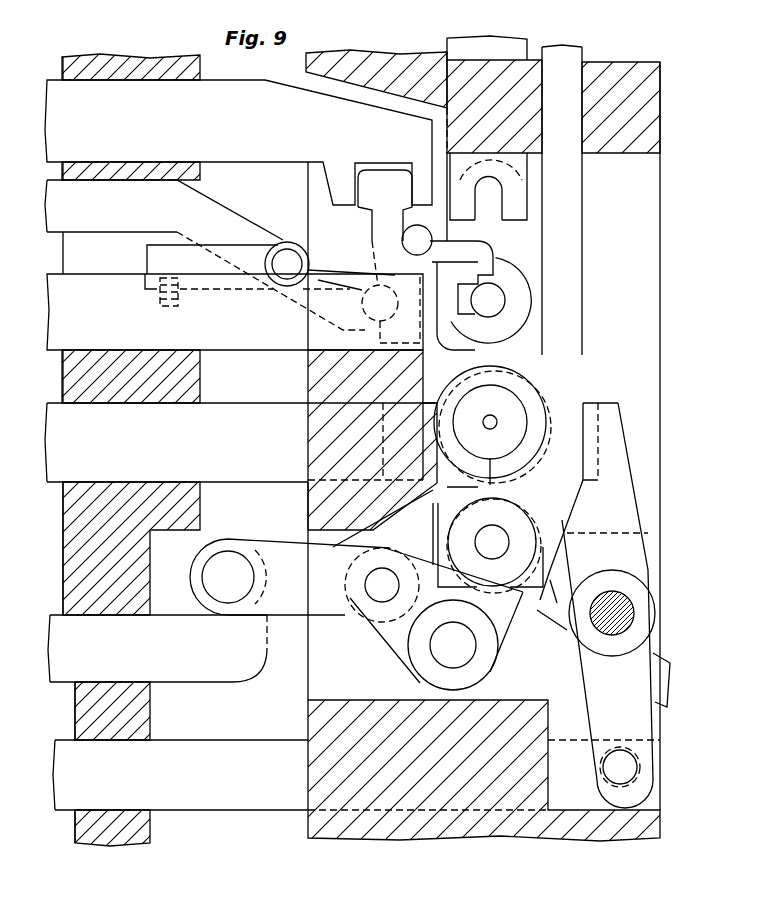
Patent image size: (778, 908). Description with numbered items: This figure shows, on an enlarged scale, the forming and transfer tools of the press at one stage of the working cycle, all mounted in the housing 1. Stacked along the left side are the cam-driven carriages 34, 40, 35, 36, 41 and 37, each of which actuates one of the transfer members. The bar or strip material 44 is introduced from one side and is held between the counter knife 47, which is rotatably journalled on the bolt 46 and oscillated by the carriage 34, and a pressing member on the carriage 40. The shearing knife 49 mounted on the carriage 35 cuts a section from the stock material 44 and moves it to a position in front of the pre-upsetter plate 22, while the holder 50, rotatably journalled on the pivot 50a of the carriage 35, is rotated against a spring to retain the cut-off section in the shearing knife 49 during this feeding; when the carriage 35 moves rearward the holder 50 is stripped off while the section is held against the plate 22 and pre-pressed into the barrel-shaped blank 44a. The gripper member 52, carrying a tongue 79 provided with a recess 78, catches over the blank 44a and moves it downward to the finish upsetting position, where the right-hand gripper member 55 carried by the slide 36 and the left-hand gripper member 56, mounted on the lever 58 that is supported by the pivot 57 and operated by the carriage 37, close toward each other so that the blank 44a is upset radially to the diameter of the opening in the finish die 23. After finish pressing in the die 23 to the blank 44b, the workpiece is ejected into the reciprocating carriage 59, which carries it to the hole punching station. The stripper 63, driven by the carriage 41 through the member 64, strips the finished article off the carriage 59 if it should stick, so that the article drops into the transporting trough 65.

The housing 1 is at (358, 833).
The pre-upsetter plate 22 is at (524, 307).
The finish die 23 is at (517, 377).
The carriage 34 is at (198, 138).
The carriage 35 is at (118, 326).
The carriage 36 is at (130, 459).
The carriage 37 is at (138, 785).
The carriage 40 is at (128, 224).
The carriage 41 is at (130, 660).
The bar or strip material 44 is at (500, 296).
The barrel-shaped blank 44a is at (507, 400).
The finish-pressed blank 44b is at (520, 533).
The bolt 46 is at (410, 236).
The counter knife 47 is at (391, 220).
The shearing knife 49 is at (447, 330).
The holder 50 is at (485, 248).
The pivot 50a is at (285, 258).
The gripper member 52 is at (522, 160).
The right-hand gripper member 55 is at (440, 470).
The left-hand gripper member 56 is at (520, 460).
The pivot 57 is at (598, 626).
The lever 58 is at (592, 675).
The reciprocating carriage 59 is at (553, 470).
The stripper 63 is at (392, 625).
The member 64 is at (293, 605).
The transporting trough 65 is at (556, 607).
The recess 78 is at (478, 202).
The tongue 79 is at (518, 192).